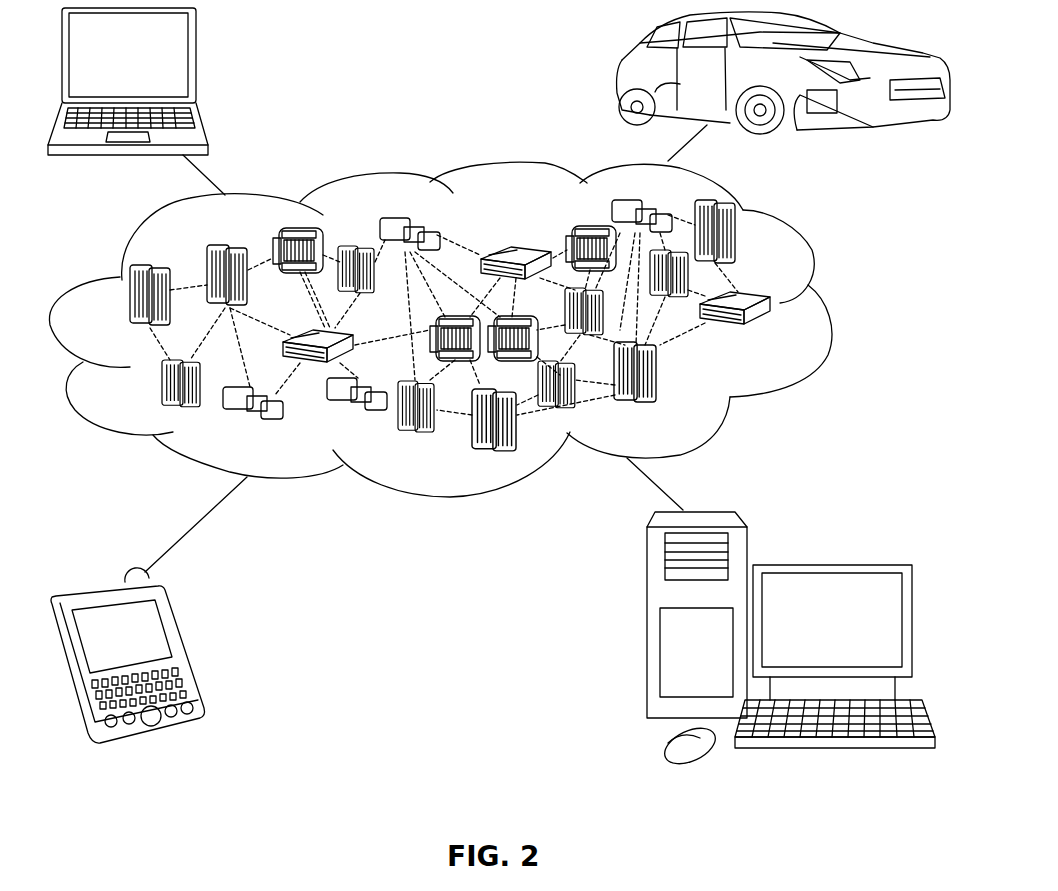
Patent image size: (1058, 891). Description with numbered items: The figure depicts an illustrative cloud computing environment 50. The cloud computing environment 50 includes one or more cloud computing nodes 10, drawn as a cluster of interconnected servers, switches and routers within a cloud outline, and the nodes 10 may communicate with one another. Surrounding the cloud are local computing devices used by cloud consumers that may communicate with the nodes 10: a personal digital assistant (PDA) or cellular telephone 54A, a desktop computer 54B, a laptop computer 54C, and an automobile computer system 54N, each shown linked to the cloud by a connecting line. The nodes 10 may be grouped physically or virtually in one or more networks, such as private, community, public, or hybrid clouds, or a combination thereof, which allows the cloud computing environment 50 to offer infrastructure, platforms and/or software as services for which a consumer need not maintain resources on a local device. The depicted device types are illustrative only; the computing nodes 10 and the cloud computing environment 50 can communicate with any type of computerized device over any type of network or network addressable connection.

The cloud computing node 10 is at (776, 333).
The cloud computing environment 50 is at (832, 307).
The personal digital assistant (PDA) or cellular telephone 54A is at (185, 641).
The desktop computer 54B is at (830, 562).
The laptop computer 54C is at (196, 63).
The automobile computer system 54N is at (622, 78).